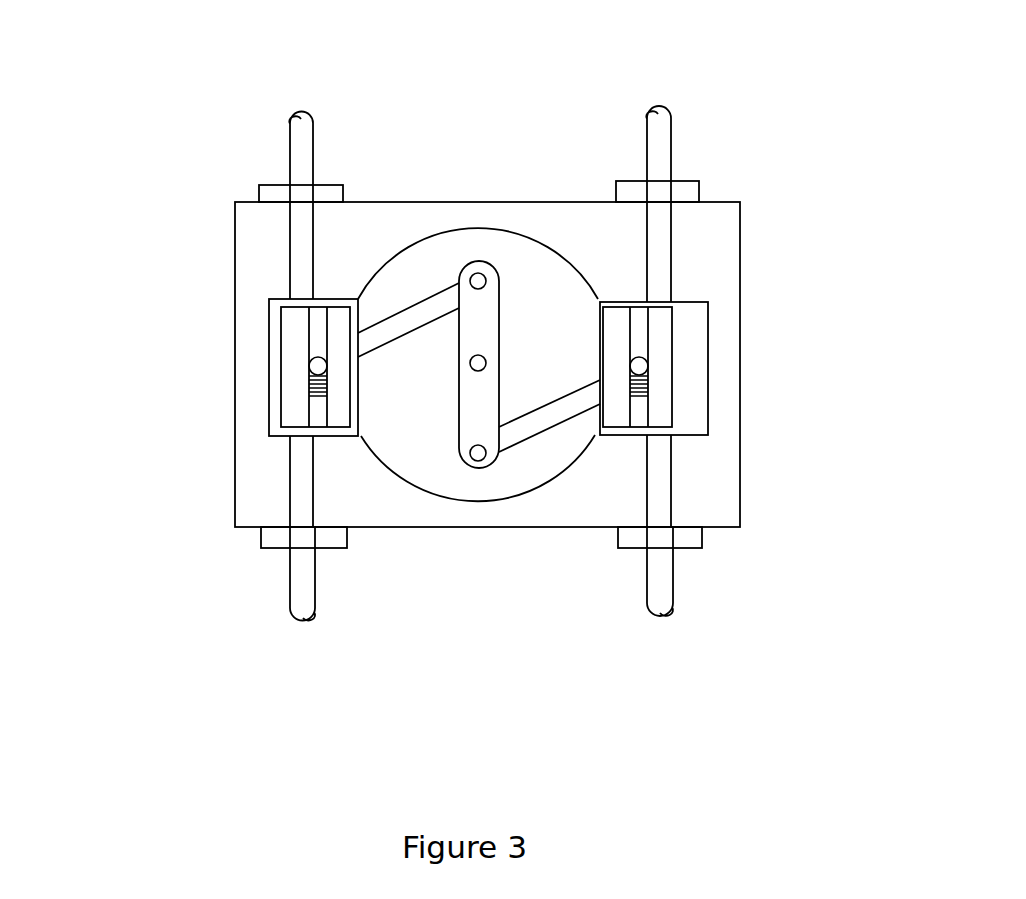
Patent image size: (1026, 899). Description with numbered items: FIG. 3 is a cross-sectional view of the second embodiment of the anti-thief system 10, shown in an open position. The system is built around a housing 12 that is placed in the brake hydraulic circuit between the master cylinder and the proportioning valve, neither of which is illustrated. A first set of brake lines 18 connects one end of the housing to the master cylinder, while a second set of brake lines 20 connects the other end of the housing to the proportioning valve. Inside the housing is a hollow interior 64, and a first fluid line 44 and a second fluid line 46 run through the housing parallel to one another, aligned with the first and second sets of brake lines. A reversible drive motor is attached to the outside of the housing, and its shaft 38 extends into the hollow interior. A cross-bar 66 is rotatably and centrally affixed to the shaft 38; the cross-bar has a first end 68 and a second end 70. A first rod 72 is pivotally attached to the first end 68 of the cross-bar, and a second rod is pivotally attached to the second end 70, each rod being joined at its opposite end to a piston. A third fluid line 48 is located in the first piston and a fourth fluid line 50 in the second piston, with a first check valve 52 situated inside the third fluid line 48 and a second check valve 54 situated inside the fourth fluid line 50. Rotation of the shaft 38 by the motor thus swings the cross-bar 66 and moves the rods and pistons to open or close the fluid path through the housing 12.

The anti-thief system 10 is at (116, 55).
The housing 12 is at (703, 494).
The first set of brake lines 18 is at (656, 157).
The second set of brake lines 20 is at (663, 579).
The shaft 38 is at (473, 371).
The first fluid line 44 is at (303, 253).
The second fluid line 46 is at (662, 247).
The third fluid line 48 is at (320, 343).
The fourth fluid line 50 is at (640, 348).
The first check valve 52 is at (310, 393).
The second check valve 54 is at (642, 390).
The hollow interior 64 is at (425, 267).
The cross-bar 66 is at (479, 310).
The first end 68 is at (477, 262).
The second end 70 is at (478, 461).
The first rod 72 is at (523, 428).